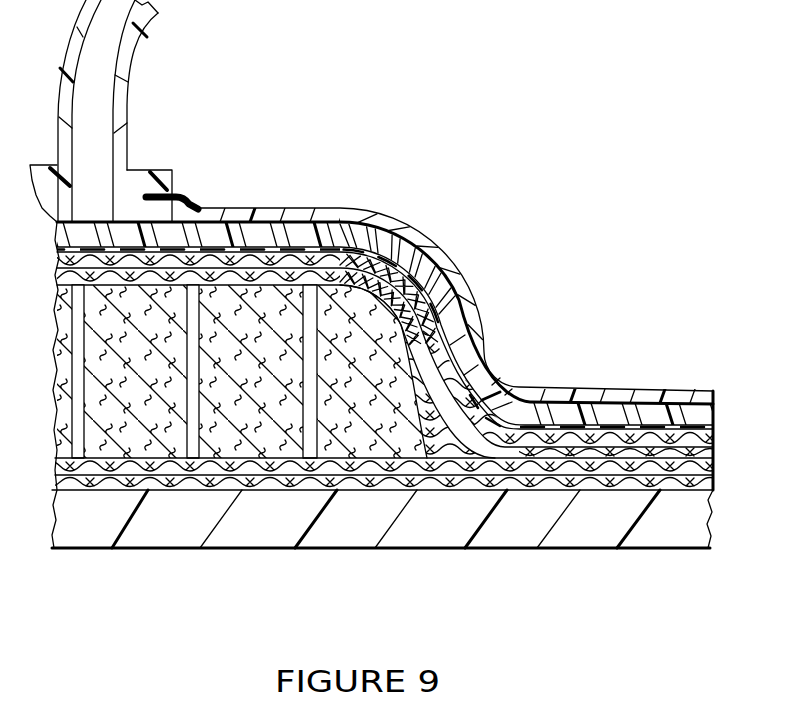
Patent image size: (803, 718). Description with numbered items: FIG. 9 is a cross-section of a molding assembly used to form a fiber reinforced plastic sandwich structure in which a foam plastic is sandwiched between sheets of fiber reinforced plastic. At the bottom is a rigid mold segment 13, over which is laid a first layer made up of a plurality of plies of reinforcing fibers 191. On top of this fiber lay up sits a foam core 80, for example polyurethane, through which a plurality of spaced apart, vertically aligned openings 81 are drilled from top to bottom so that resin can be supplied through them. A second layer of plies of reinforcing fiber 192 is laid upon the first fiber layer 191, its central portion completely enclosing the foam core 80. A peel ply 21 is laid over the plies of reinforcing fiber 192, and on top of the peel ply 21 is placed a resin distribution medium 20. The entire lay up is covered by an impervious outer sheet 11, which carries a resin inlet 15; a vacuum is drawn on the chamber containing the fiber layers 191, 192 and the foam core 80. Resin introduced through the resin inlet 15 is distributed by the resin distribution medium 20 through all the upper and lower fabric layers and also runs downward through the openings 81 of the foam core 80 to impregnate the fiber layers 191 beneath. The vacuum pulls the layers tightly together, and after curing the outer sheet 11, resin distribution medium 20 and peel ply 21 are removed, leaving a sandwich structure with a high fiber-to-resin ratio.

The resin inlet 15 is at (137, 50).
The resin distribution medium 20 is at (130, 222).
The impervious outer sheet 11 is at (279, 212).
The peel ply 21 is at (338, 236).
The foam core 80 is at (372, 285).
The second layer of plies of reinforcing fiber 192 is at (437, 263).
The openings 81 is at (193, 415).
The first layer of plies of reinforcing fiber 191 is at (415, 445).
The rigid mold segment 13 is at (645, 550).